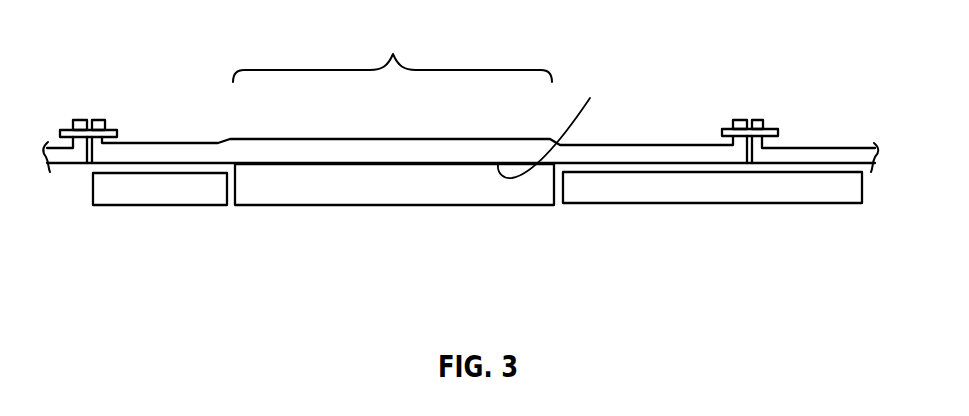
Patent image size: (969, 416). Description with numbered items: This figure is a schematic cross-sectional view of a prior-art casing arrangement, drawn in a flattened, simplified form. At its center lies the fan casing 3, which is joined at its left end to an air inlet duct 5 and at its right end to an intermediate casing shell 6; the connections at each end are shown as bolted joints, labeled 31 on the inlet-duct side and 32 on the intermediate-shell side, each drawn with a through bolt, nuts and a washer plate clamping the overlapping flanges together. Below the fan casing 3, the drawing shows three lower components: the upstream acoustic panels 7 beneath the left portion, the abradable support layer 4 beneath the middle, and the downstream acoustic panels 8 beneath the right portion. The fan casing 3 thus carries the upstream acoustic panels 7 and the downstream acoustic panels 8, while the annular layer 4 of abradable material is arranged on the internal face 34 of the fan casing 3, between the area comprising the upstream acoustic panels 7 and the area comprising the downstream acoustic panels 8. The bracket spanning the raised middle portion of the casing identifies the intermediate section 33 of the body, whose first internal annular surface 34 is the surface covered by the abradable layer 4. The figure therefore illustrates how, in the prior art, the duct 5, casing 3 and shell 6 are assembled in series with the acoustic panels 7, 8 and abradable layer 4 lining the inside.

The fan casing 3 is at (382, 138).
The abradable support layer 4 is at (405, 206).
The air inlet duct 5 is at (58, 148).
The intermediate casing shell 6 is at (853, 147).
The upstream acoustic panels 7 is at (153, 206).
The downstream acoustic panels 8 is at (752, 204).
The left bolt connection 31 is at (99, 120).
The right bolt connection 32 is at (742, 120).
The intermediate section 33 is at (392, 56).
The internal face 34 is at (552, 124).